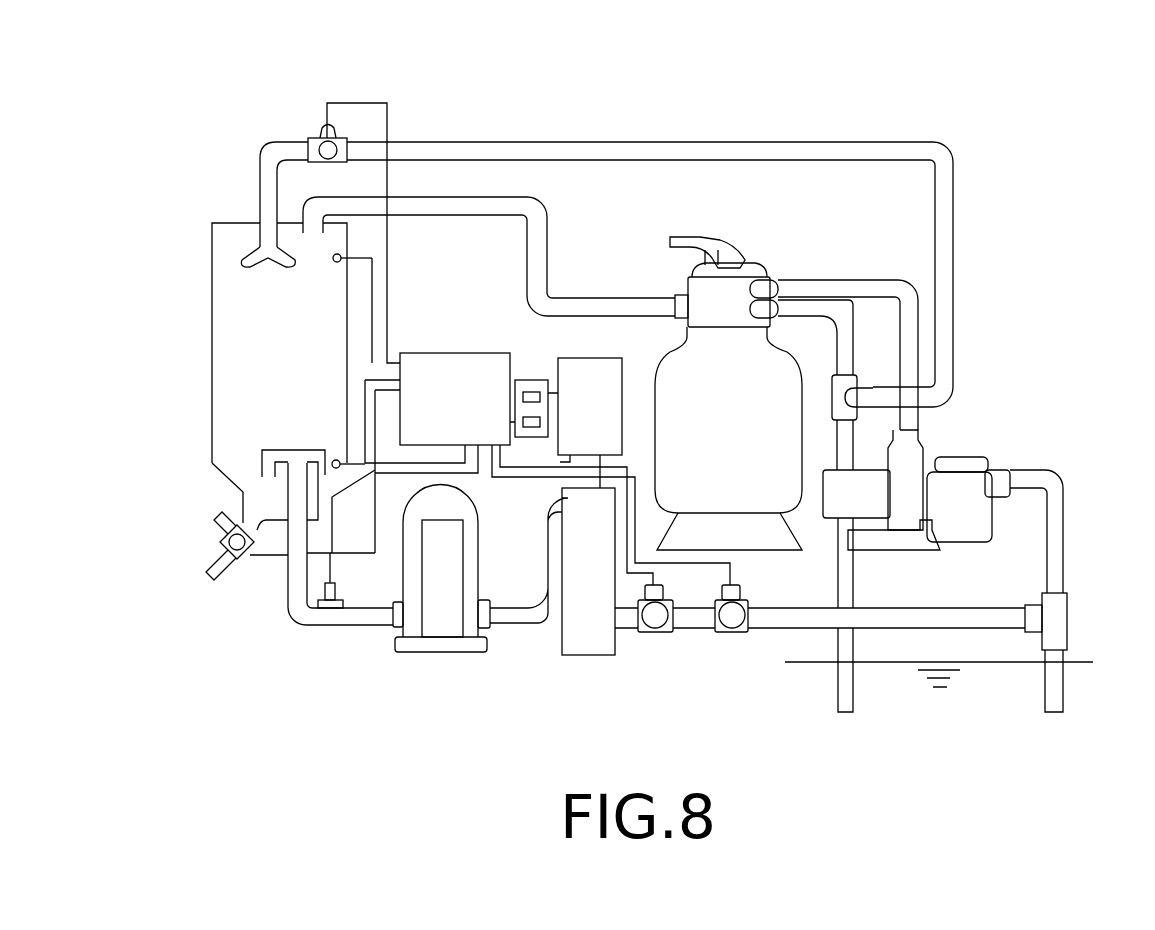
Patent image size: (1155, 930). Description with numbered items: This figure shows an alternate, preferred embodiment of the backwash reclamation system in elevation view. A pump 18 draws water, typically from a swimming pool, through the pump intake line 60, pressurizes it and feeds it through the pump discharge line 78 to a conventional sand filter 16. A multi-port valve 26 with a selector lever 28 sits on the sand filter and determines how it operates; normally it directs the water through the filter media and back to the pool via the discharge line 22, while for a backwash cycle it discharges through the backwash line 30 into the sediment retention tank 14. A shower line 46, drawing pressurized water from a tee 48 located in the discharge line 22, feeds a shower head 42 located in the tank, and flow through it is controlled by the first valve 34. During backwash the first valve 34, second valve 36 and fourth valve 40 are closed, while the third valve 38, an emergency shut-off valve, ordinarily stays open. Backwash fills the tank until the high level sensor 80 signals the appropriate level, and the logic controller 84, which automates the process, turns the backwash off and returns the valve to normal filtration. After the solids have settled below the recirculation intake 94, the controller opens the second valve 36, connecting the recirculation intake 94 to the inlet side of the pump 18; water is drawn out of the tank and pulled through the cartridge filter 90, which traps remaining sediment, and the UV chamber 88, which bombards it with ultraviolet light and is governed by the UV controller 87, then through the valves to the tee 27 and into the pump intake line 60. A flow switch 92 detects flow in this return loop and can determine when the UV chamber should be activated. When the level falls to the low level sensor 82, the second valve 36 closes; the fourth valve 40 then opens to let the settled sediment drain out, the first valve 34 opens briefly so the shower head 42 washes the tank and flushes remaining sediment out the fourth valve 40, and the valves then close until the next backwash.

The sediment retention tank 14 is at (212, 250).
The shower head 42 is at (263, 250).
The first valve 34 is at (312, 142).
The backwash line 30 is at (505, 210).
The logic controller 84 is at (487, 367).
The UV controller 87 is at (585, 375).
The shower line 46 is at (678, 152).
The selector lever 28 is at (693, 240).
The multi-port valve 26 is at (727, 290).
The pump discharge line 78 is at (903, 293).
The tee 48 is at (843, 383).
The sand filter 16 is at (723, 475).
The pump 18 is at (960, 513).
The pump intake line 60 is at (1053, 540).
The tee 27 is at (1052, 620).
The discharge line 22 is at (843, 682).
The second valve 36 is at (730, 633).
The third valve 38 is at (653, 633).
The UV chamber 88 is at (580, 640).
The cartridge filter 90 is at (440, 620).
The flow switch 92 is at (333, 600).
The high level sensor 80 is at (333, 262).
The low level sensor 82 is at (331, 466).
The recirculation intake 94 is at (262, 467).
The fourth valve 40 is at (222, 548).